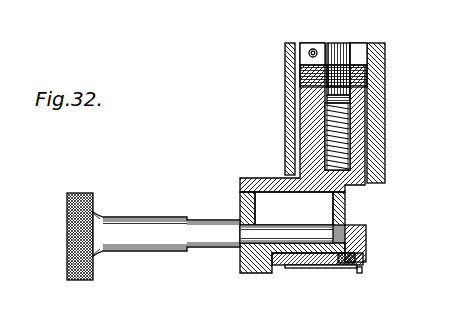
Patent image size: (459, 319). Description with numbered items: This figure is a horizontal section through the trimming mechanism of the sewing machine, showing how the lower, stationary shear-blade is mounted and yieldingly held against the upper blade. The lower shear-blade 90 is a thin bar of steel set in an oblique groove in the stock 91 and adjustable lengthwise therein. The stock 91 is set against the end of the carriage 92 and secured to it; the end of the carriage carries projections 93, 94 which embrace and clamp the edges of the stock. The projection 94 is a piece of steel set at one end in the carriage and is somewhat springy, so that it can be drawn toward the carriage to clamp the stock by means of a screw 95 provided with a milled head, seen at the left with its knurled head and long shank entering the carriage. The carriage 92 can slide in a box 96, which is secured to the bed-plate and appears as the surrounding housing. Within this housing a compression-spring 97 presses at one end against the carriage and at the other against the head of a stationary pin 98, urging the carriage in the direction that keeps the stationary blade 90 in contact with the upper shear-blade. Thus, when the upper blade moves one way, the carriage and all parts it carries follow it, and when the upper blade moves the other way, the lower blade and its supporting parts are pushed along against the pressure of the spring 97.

The lower shear-blade 90 is at (345, 264).
The stock 91 is at (302, 267).
The carriage 92 is at (277, 224).
The projection 93 is at (257, 273).
The projection 94 is at (367, 248).
The screw 95 is at (150, 218).
The box 96 is at (385, 112).
The compression-spring 97 is at (365, 142).
The stationary pin 98 is at (338, 62).